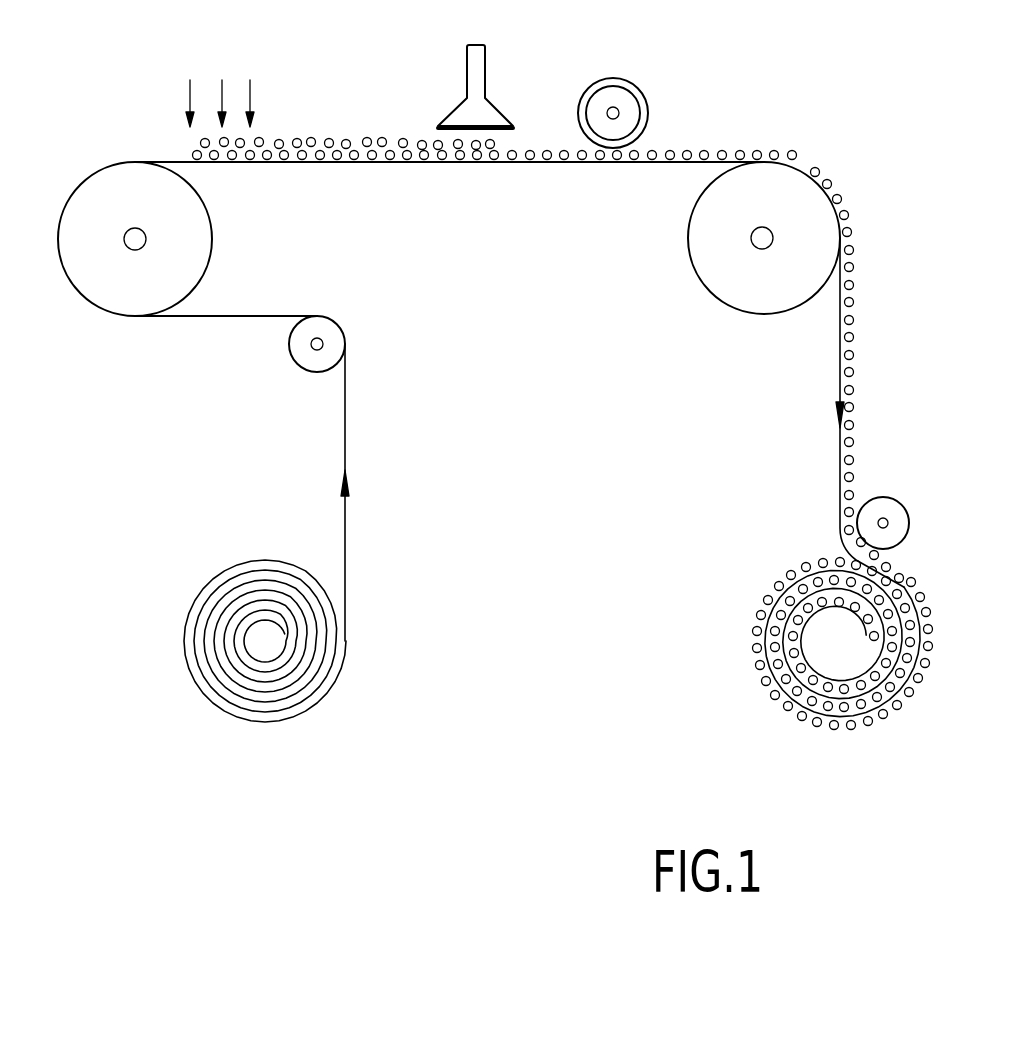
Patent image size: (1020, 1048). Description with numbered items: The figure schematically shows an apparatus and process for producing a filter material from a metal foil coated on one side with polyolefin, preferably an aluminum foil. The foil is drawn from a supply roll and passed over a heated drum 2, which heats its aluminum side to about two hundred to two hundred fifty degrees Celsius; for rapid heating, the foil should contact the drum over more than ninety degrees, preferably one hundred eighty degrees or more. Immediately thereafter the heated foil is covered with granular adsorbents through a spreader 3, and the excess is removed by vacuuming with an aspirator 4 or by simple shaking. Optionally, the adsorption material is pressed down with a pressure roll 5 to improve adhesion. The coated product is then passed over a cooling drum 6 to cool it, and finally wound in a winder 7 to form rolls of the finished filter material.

The heated drum 2 is at (106, 293).
The spreader 3 is at (207, 95).
The aspirator 4 is at (478, 80).
The pressure roll 5 is at (625, 102).
The cooling drum 6 is at (712, 275).
The winder 7 is at (263, 652).